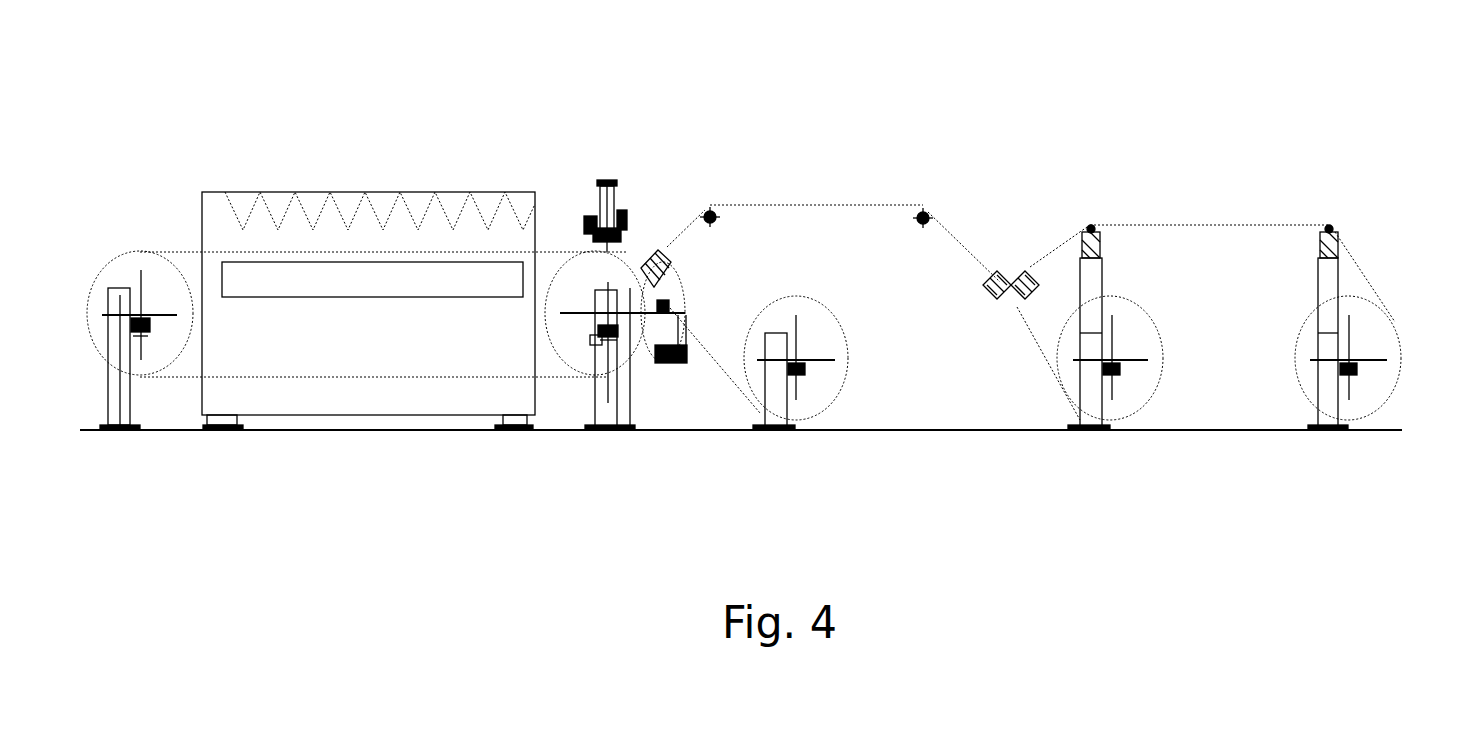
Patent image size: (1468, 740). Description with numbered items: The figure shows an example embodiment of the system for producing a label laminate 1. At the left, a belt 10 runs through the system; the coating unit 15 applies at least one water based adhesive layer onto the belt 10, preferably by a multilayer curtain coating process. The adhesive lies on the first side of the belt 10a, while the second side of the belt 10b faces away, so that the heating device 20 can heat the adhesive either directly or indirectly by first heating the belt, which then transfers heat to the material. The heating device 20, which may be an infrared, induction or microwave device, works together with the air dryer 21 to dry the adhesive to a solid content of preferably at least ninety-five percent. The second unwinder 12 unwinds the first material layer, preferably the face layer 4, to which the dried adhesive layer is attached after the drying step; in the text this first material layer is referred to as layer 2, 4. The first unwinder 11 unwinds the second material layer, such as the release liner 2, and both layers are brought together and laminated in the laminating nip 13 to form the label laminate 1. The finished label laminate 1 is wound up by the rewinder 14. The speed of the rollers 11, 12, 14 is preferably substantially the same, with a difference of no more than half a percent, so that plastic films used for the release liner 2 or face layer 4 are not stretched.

The label laminate 1 is at (1016, 363).
The release liner 2 is at (833, 190).
The face layer 4 is at (1212, 205).
The belt 10 is at (140, 389).
The first side of the belt 10a is at (372, 308).
The second side of the belt 10b is at (383, 200).
The first unwinder 11 is at (1377, 327).
The second unwinder 12 is at (789, 414).
The laminating nip 13 is at (1015, 209).
The rewinder of the label laminate 14 is at (1099, 399).
The coating unit 15 is at (638, 173).
The heating device 20 is at (368, 239).
The air dryer 21 is at (380, 171).